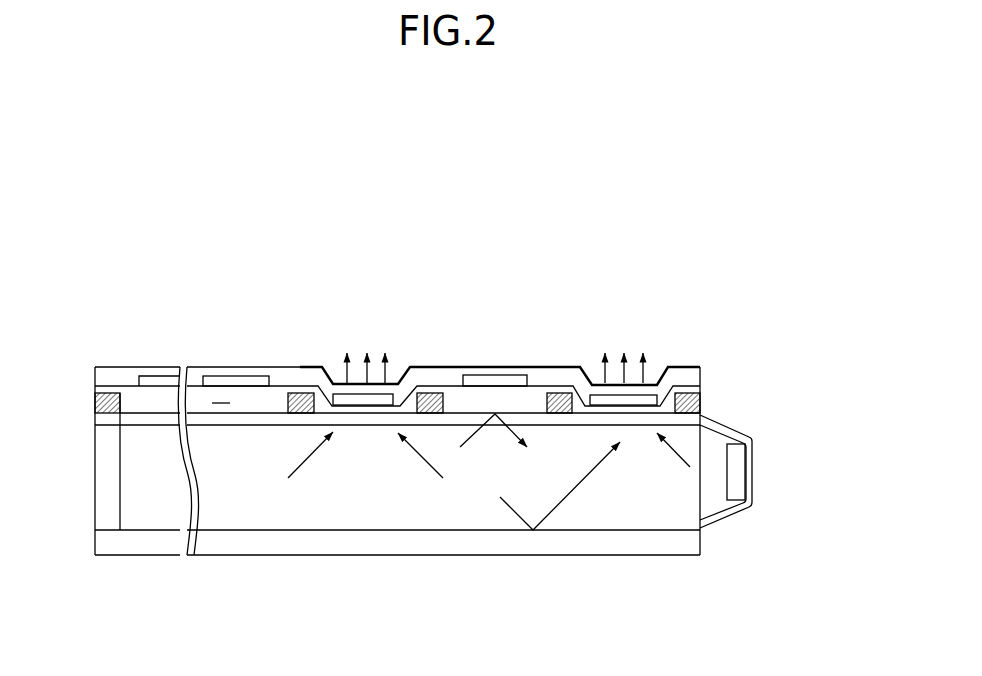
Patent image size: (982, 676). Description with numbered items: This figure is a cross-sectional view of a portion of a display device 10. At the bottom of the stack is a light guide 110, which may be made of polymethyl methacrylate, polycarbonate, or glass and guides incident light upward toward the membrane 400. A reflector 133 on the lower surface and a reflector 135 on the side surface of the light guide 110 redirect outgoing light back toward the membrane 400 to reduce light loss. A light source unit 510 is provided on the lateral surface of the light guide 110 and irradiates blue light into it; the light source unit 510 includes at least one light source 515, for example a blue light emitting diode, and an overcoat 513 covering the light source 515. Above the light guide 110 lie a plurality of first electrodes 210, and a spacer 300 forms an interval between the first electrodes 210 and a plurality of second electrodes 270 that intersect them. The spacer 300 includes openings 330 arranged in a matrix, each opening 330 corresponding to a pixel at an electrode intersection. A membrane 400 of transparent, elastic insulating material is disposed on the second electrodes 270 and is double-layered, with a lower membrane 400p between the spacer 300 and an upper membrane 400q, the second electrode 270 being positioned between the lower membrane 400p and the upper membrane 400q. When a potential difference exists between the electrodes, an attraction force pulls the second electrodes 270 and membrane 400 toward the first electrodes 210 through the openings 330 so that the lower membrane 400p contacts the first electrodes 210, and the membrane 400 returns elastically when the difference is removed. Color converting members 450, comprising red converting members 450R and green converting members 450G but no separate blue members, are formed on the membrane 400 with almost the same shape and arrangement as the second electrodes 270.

The display device 10 is at (332, 247).
The light guide 110 is at (625, 508).
The reflector 133 is at (434, 543).
The reflector 135 is at (108, 475).
The first electrode 210 is at (363, 418).
The second electrode 270 is at (248, 382).
The spacer 300 is at (97, 402).
The opening 330 is at (222, 403).
The membrane 400 is at (467, 370).
The lower membrane 400p is at (692, 390).
The upper membrane 400q is at (683, 373).
The color converting member 450 is at (495, 326).
The red converting member 450R is at (415, 368).
The green converting member 450G is at (490, 368).
The light source unit 510 is at (781, 469).
The overcoat 513 is at (725, 430).
The light source 515 is at (742, 508).